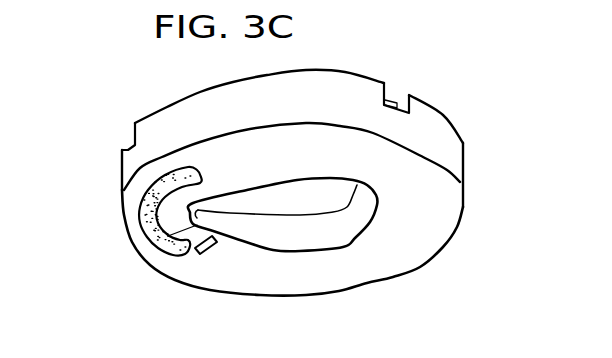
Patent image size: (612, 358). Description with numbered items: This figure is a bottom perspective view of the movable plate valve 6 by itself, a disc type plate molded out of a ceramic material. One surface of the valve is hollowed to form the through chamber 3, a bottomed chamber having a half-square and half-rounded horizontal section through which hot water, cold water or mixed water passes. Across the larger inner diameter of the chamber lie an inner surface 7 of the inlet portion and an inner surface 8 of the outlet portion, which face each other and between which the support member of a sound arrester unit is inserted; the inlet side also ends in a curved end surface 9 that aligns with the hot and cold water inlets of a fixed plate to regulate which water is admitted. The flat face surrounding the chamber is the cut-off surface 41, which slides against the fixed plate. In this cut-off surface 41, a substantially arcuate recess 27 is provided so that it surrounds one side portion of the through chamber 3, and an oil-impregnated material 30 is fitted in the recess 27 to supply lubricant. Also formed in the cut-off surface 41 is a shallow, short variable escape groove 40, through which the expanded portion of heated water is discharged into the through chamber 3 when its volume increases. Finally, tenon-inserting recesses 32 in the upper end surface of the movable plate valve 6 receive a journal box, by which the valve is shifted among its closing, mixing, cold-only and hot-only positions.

The through chamber 3 is at (355, 240).
The movable plate valve 6 is at (443, 130).
The inner surface of inlet portion 7 is at (377, 205).
The inner surface of outlet portion 8 is at (158, 248).
The curved end surface of inlet portion 9 is at (317, 202).
The arcuate recess 27 is at (140, 211).
The oil-impregnated material 30 is at (147, 223).
The tenon-inserting recesses 32 is at (133, 143).
The variable escape groove 40 is at (196, 250).
The cut-off surface 41 is at (350, 272).